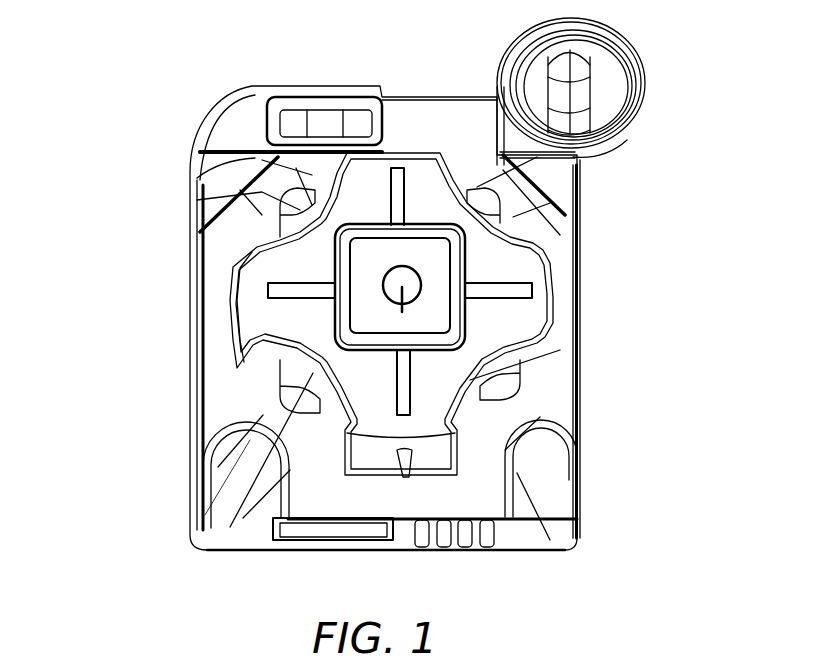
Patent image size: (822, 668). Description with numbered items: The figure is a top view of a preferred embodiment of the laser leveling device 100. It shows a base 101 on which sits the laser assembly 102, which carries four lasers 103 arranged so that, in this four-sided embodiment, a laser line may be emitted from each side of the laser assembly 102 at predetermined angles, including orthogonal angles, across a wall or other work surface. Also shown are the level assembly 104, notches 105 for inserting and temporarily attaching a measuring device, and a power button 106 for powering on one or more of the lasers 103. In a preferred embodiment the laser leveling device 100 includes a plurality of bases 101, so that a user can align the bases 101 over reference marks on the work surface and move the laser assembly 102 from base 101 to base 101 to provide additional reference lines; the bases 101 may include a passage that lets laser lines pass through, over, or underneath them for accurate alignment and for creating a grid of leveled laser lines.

The laser leveling device 100 is at (650, 49).
The base 101 is at (578, 525).
The laser assembly 102 is at (222, 255).
The laser 103 is at (398, 133).
The level assembly 104 is at (627, 137).
The notch 105 is at (443, 113).
The power button 106 is at (433, 318).